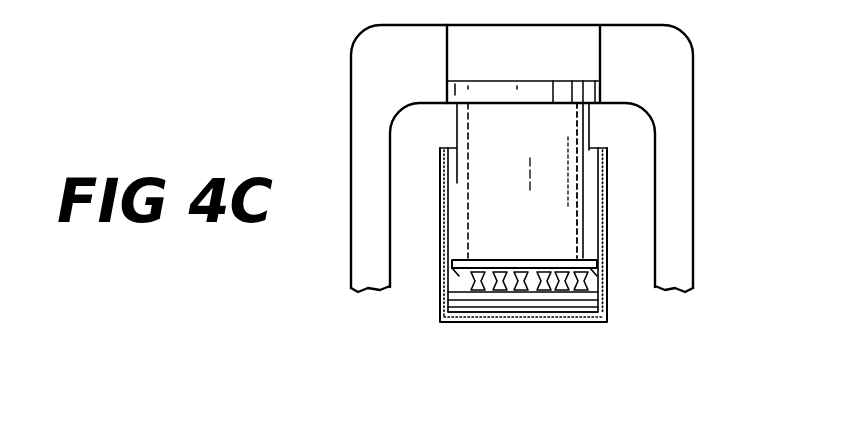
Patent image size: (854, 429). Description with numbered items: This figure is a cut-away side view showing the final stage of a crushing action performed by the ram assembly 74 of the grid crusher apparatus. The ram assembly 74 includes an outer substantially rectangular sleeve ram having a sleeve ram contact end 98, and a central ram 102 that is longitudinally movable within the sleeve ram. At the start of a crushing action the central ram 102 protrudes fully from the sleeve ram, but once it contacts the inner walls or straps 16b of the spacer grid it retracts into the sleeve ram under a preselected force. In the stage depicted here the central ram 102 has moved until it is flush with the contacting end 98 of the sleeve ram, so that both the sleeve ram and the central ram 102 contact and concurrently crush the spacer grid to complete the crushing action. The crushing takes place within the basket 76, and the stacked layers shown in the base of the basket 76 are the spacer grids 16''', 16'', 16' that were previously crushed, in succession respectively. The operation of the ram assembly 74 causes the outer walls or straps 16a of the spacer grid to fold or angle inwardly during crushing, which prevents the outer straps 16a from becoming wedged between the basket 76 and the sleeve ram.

The ram assembly 74 is at (589, 128).
The basket 76 is at (440, 174).
The sleeve ram contact end 98 is at (448, 277).
The central ram 102 is at (585, 228).
The outer walls or straps 16a is at (448, 285).
The inner walls or straps 16b is at (553, 272).
The previously crushed spacer grid 16' is at (525, 338).
The previously crushed spacer grid 16'' is at (523, 342).
The previously crushed spacer grid 16''' is at (504, 349).